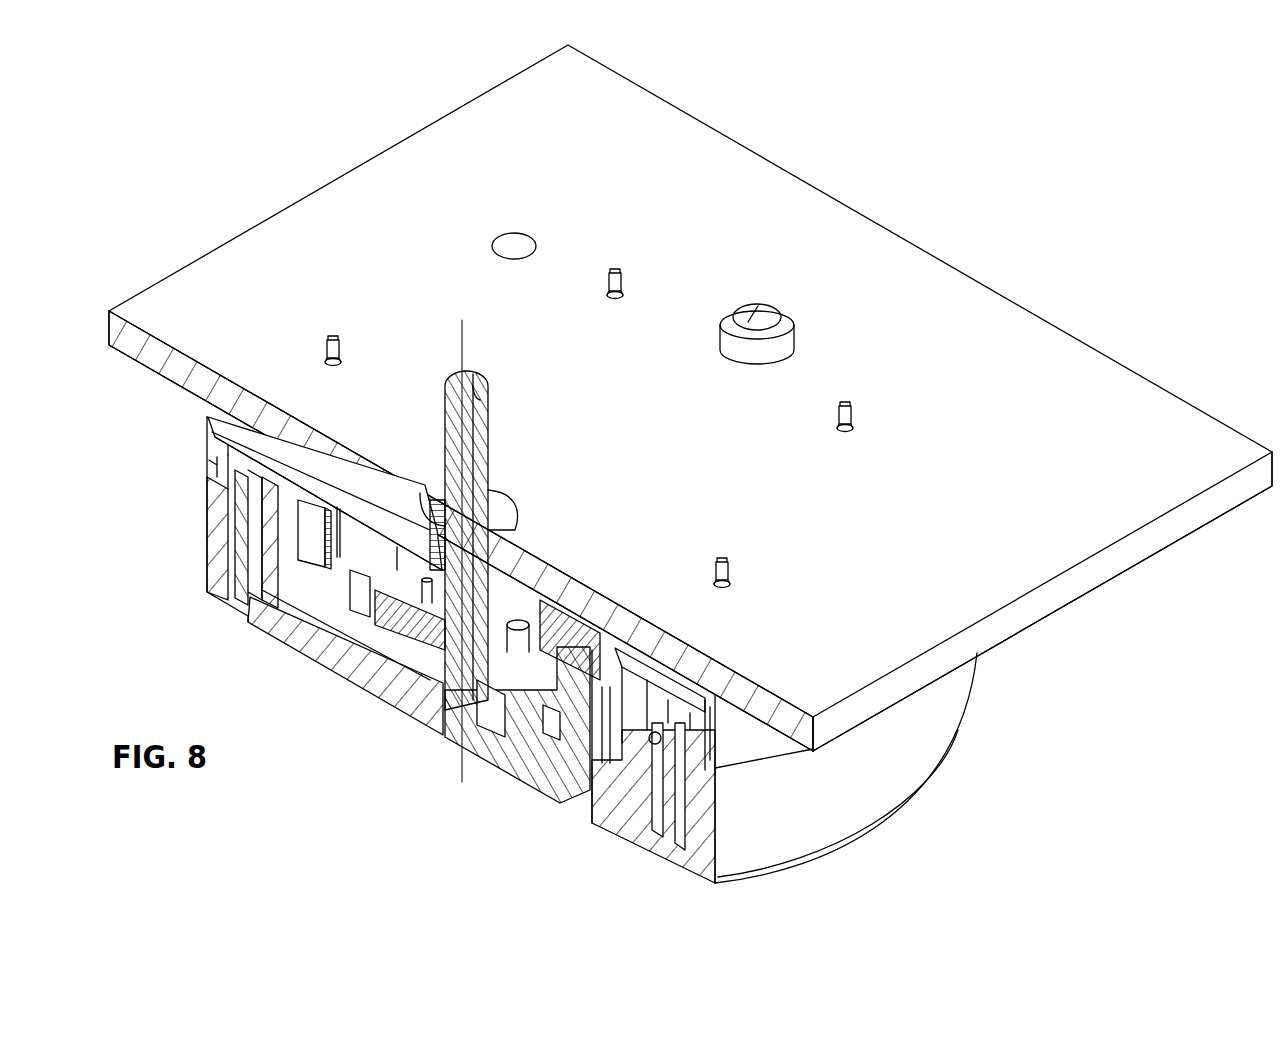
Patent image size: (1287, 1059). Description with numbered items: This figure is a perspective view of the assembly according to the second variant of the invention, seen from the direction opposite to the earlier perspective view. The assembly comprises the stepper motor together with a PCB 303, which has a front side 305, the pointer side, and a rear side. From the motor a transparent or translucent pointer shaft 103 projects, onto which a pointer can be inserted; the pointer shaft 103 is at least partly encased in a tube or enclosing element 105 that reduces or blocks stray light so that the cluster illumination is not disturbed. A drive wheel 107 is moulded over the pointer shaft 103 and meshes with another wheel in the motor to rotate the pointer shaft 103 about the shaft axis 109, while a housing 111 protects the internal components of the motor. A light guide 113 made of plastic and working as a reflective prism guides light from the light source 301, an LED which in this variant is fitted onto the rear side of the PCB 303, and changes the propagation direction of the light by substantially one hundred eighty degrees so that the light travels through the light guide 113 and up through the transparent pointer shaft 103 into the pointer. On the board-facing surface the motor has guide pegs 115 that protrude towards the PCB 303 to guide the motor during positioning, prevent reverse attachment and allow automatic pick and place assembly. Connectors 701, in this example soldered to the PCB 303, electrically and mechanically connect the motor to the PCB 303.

The pointer shaft 103 is at (469, 372).
The enclosing element 105 is at (490, 440).
The drive wheel 107 is at (388, 633).
The shaft axis 109 is at (460, 328).
The housing 111 is at (913, 753).
The light guide 113 is at (540, 775).
The guide pegs 115 is at (752, 312).
The light source 301 is at (565, 605).
The PCB 303 is at (1135, 548).
The front side 305 is at (1070, 420).
The connectors 701 is at (333, 336).